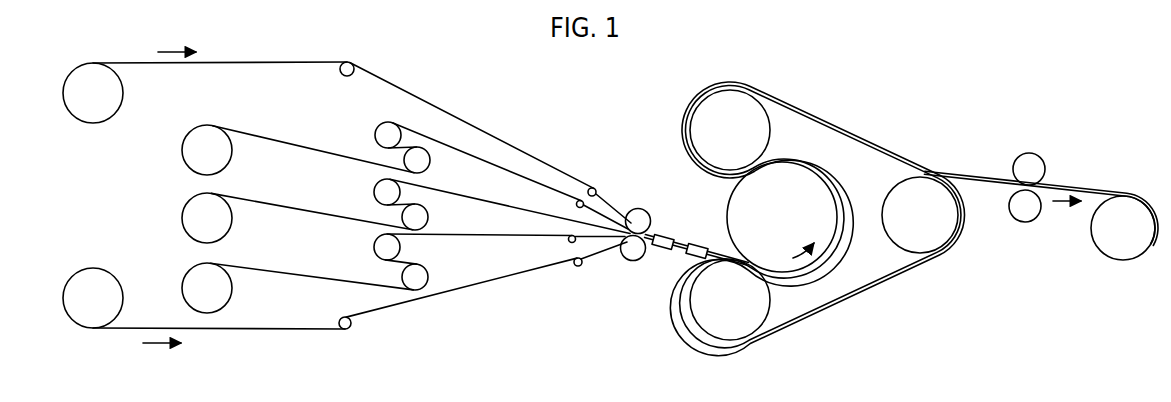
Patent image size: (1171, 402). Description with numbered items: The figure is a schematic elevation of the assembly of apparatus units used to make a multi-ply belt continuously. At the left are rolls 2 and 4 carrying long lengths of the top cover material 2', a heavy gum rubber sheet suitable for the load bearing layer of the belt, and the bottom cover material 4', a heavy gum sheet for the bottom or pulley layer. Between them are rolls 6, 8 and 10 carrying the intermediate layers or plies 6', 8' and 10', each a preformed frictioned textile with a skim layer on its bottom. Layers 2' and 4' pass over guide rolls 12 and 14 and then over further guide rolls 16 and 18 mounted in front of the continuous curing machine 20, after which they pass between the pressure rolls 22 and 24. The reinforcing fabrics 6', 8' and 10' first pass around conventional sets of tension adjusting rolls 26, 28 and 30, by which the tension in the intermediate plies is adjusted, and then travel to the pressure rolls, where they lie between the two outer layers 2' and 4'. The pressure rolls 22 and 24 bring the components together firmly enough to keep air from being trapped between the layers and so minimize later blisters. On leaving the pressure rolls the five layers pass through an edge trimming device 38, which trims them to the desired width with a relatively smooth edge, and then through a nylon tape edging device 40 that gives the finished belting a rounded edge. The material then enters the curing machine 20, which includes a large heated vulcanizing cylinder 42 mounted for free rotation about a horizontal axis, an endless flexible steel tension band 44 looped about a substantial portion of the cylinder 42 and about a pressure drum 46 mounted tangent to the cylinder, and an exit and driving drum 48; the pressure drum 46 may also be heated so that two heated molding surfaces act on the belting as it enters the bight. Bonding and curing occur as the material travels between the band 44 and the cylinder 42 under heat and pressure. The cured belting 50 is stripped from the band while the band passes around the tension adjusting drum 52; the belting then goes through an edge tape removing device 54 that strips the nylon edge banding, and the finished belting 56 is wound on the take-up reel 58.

The roll 2 is at (87, 101).
The roll 4 is at (82, 291).
The roll 6 is at (191, 150).
The roll 8 is at (191, 218).
The roll 10 is at (185, 288).
The top cover material 2' is at (362, 129).
The bottom cover material 4' is at (360, 301).
The intermediate layer 6' is at (420, 169).
The intermediate layer 8' is at (420, 203).
The intermediate layer 10' is at (417, 251).
The guide roll 12 is at (342, 74).
The guide roll 14 is at (338, 321).
The guide roll 16 is at (588, 186).
The guide roll 18 is at (566, 268).
The continuous curing machine 20 is at (832, 109).
The pressure roll 22 is at (645, 208).
The pressure roll 24 is at (628, 261).
The tension adjusting rolls 26 is at (368, 141).
The tension adjusting rolls 28 is at (370, 207).
The tension adjusting rolls 30 is at (376, 271).
The edge trimming device 38 is at (665, 236).
The nylon tape edging device 40 is at (690, 256).
The vulcanizing cylinder 42 is at (770, 207).
The endless flexible steel tension band 44 is at (863, 289).
The pressure drum 46 is at (719, 327).
The exit and driving drum 48 is at (719, 129).
The cured belting 50 is at (933, 168).
The tension adjusting drum 52 is at (909, 214).
The edge tape removing device 54 is at (1039, 158).
The finished belting 56 is at (1077, 189).
The take-up reel 58 is at (1112, 243).